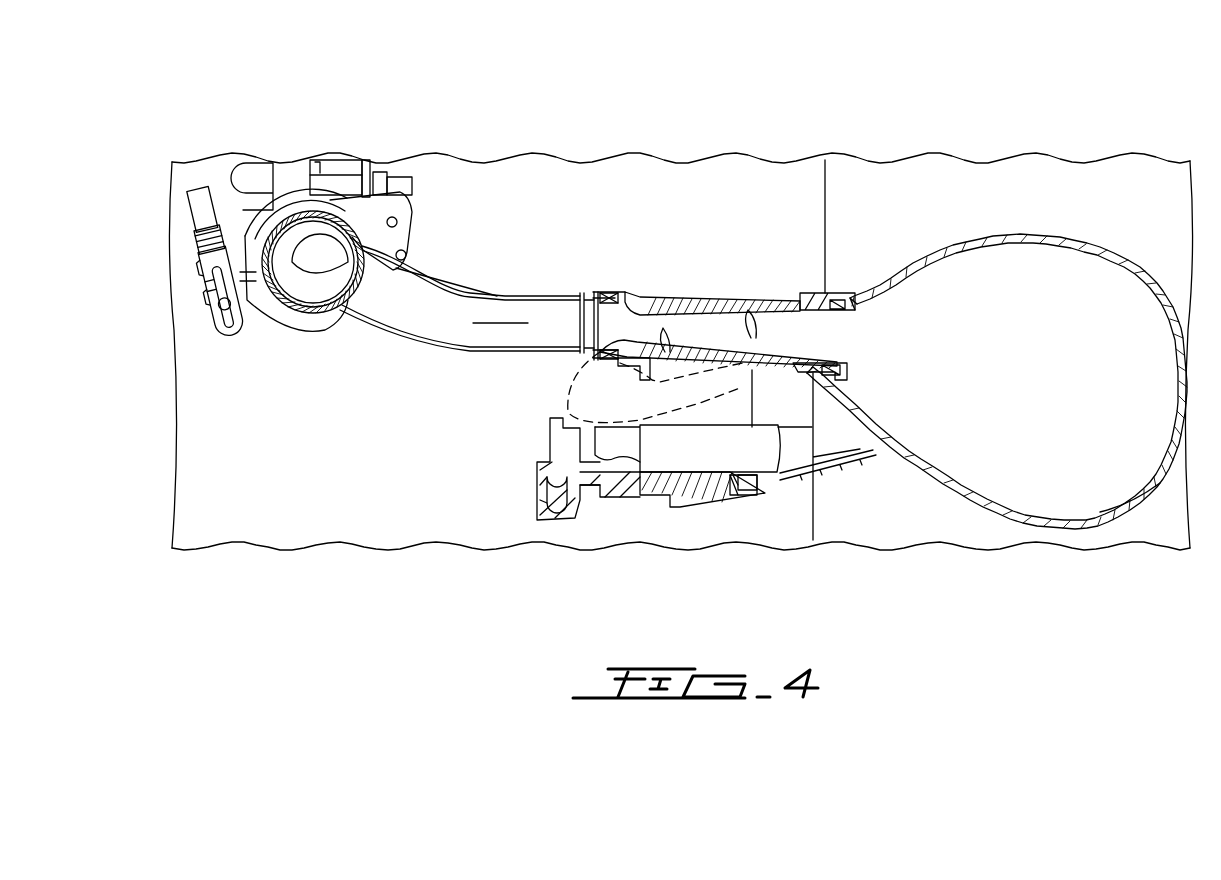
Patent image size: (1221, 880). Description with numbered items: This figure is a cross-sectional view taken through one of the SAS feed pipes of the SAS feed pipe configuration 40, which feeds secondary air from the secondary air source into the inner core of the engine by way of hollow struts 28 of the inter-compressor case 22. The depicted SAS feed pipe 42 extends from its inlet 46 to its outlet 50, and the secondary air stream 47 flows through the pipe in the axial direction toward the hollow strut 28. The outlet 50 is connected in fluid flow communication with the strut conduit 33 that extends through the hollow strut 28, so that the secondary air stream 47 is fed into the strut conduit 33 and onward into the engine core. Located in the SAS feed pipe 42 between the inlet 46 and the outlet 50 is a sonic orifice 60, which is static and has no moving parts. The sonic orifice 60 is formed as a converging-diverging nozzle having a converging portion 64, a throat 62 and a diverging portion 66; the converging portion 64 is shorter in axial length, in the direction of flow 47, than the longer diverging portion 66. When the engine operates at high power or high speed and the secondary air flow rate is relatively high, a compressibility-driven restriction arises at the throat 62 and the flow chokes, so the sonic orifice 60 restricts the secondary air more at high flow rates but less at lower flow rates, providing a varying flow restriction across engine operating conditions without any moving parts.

The SAS feed pipe configuration 40 is at (343, 398).
The inlet 46 is at (371, 197).
The SAS feed pipe 42 is at (507, 284).
The secondary air stream 47 is at (528, 323).
The converging portion 64 is at (582, 362).
The sonic orifice 60 is at (643, 290).
The diverging portion 66 is at (750, 333).
The throat 62 is at (666, 352).
The hollow strut 28 is at (1010, 234).
The strut conduit 33 is at (1090, 427).
The outlet 50 is at (868, 328).
The inter-compressor case 22 is at (712, 440).